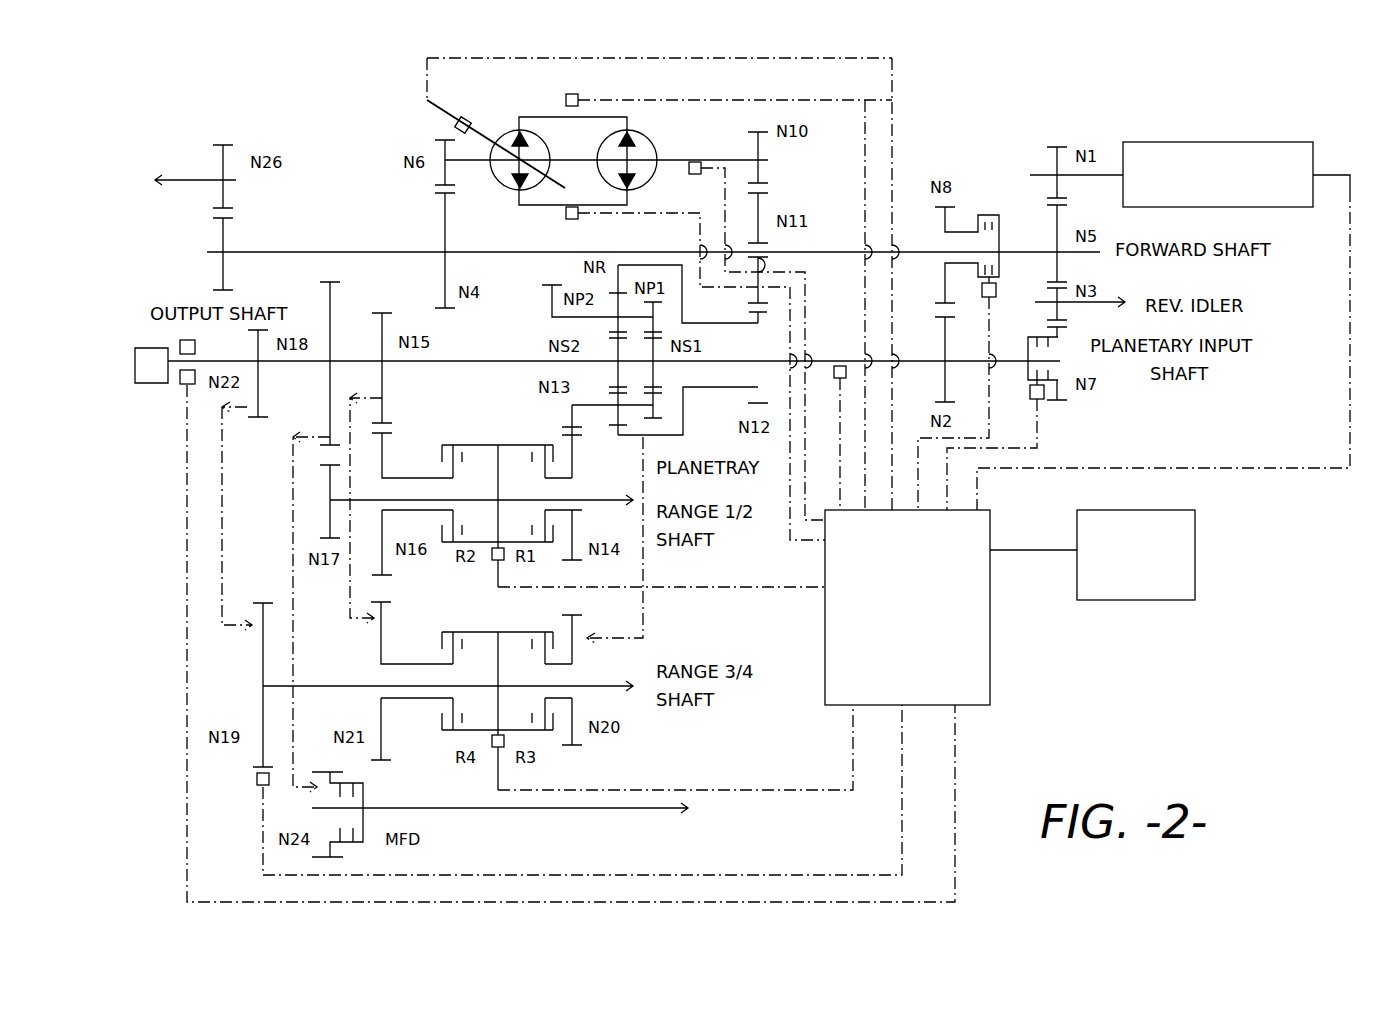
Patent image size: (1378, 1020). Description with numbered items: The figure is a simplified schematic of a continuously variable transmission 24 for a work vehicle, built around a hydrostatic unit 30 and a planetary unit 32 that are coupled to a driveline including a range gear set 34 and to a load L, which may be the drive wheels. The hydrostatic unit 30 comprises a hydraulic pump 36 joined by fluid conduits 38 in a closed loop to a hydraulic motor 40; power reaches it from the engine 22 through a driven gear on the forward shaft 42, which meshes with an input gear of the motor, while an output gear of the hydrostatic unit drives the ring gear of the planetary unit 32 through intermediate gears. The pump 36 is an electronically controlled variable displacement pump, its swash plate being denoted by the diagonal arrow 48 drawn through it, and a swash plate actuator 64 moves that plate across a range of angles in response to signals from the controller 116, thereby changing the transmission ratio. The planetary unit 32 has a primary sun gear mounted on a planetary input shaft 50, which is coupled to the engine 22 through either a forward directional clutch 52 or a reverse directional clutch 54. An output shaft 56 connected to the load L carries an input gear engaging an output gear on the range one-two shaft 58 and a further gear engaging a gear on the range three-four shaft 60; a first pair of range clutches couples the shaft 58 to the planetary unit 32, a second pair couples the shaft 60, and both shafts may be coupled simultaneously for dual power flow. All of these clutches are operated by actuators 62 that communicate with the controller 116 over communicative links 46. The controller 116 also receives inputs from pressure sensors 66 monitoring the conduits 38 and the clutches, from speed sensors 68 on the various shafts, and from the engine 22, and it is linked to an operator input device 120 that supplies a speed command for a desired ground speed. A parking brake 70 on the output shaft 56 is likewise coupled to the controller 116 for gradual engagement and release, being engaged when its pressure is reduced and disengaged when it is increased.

The engine 22 is at (1313, 153).
The continuously variable transmission 24 is at (1090, 128).
The hydrostatic unit 30 is at (626, 155).
The planetary unit 32 is at (525, 430).
The range gear set 34 is at (684, 605).
The hydraulic pump 36 is at (500, 195).
The fluid conduits 38 is at (637, 135).
The hydraulic motor 40 is at (660, 140).
The forward shaft 42 is at (290, 252).
The communicative link 46 is at (865, 148).
The diagonal arrow 48 is at (445, 215).
The planetary input shaft 50 is at (720, 360).
The forward directional clutch 52 is at (978, 215).
The reverse directional clutch 54 is at (1067, 392).
The output shaft 56 is at (315, 363).
The range 1/2 shaft 58 is at (586, 485).
The range 3/4 shaft 60 is at (318, 686).
The actuators 62 is at (492, 556).
The swash plate actuator 64 is at (435, 122).
The pressure sensors 66 is at (566, 100).
The speed sensors 68 is at (695, 174).
The parking brake 70 is at (195, 355).
The controller 116 is at (990, 668).
The input device 120 is at (1195, 550).